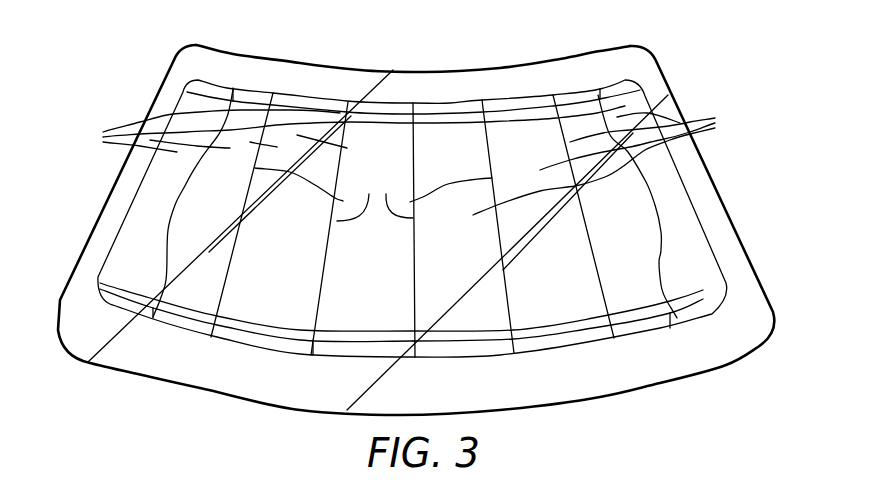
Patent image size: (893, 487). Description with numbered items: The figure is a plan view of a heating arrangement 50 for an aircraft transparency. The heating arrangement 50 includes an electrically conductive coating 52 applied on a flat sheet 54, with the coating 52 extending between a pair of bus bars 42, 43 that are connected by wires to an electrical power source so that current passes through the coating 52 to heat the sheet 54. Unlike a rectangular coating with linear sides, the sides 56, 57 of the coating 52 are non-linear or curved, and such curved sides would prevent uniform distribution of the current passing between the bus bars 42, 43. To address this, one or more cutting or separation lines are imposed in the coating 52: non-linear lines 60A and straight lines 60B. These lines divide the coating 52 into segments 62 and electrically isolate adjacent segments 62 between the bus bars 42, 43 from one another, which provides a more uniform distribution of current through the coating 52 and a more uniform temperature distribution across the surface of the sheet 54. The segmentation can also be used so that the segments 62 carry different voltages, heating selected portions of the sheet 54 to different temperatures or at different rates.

The heating arrangement 50 is at (708, 200).
The electrically conductive coating 52 is at (393, 288).
The flat sheet 54 is at (478, 70).
The side of the coating 56 is at (230, 84).
The bus bar 42 is at (613, 97).
The bus bar 43 is at (187, 312).
The side of the coating 57 is at (623, 340).
The segments 62 is at (408, 160).
The non-linear cutting or separation lines 60A is at (168, 210).
The straight cutting or separation lines 60B is at (410, 202).